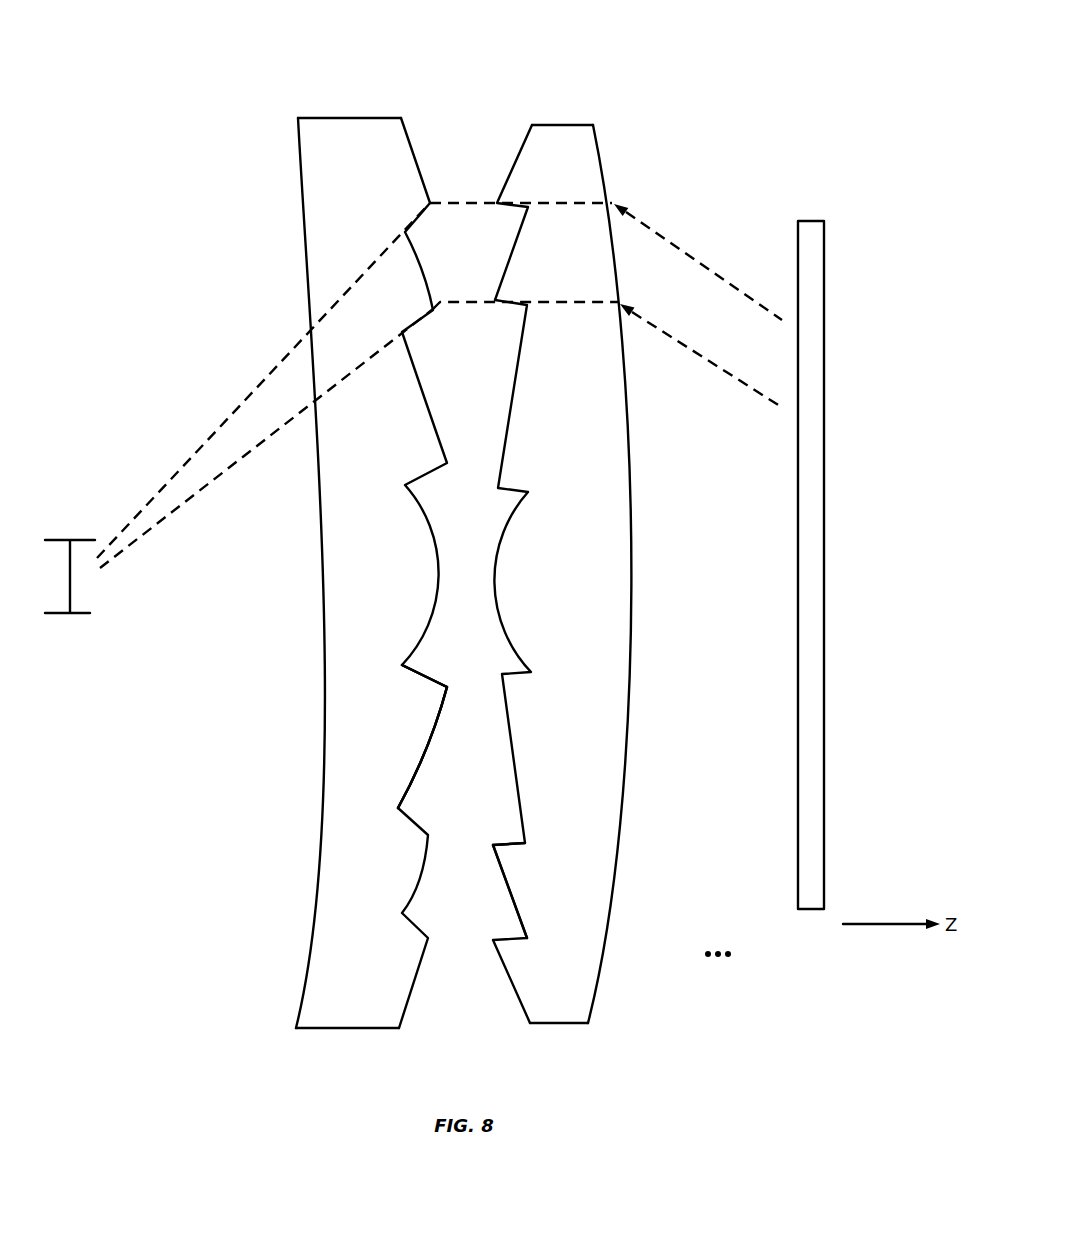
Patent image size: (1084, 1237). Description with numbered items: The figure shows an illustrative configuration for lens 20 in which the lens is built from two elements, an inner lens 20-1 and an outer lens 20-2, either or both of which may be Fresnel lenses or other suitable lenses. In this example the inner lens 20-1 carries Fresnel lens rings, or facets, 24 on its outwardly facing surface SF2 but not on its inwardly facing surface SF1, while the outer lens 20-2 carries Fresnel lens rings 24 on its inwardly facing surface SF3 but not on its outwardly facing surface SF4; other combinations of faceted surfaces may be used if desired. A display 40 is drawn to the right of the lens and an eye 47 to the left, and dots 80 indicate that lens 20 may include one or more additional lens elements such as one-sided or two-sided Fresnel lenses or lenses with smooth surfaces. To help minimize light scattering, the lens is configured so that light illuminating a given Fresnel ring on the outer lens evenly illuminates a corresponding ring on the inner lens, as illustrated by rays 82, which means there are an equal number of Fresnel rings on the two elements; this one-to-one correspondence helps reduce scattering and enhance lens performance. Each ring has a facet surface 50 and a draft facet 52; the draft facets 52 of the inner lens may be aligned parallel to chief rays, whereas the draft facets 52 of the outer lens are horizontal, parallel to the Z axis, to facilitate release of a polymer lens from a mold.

The lens 20 is at (617, 46).
The inner lens 20-1 is at (350, 140).
The outer lens 20-2 is at (573, 142).
The Fresnel lens rings (facets) 24 is at (395, 665).
The display 40 is at (810, 221).
The eye box / eye 47 is at (62, 540).
The facet surface 50 is at (415, 782).
The draft facets 52 is at (423, 670).
The dots 80 is at (739, 965).
The rays 82 is at (682, 342).
The inner (inwardly facing) surface SF1 is at (300, 963).
The outer (outwardly facing) surface SF2 is at (415, 987).
The inner (inwardly facing) surface SF3 is at (513, 980).
The outward (outwardly facing) surface SF4 is at (598, 1008).